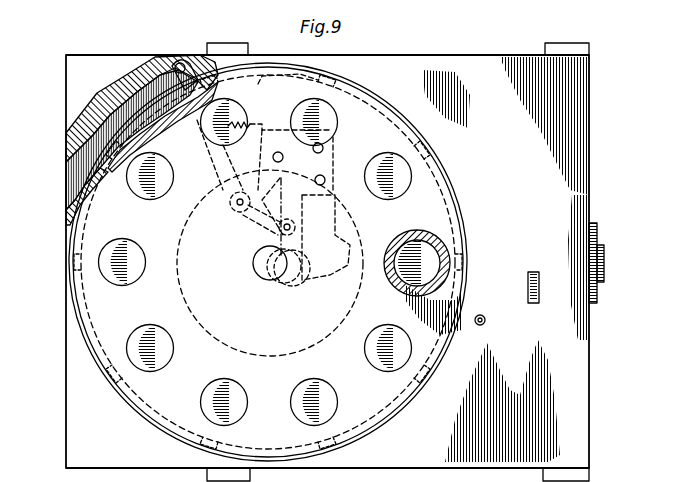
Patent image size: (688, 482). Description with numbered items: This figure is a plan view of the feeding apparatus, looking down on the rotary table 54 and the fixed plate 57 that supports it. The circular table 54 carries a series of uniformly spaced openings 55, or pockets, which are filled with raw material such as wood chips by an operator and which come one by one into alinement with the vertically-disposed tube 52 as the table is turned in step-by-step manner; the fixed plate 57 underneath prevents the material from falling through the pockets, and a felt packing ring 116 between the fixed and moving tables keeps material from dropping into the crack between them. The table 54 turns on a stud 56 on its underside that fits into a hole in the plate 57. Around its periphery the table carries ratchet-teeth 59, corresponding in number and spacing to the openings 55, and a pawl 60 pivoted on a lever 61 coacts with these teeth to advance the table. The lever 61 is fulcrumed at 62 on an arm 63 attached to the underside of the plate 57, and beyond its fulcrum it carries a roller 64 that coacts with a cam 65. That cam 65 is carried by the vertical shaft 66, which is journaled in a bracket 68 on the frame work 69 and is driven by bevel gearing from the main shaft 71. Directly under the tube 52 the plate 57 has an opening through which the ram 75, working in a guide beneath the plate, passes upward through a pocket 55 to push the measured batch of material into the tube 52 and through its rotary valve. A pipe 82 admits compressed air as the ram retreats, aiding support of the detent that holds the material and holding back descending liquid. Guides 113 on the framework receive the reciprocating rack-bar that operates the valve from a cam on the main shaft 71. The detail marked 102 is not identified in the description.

The vertically-disposed tube 52 is at (286, 262).
The rotary table 54 is at (268, 262).
The openings 55 is at (255, 262).
The stud 56 is at (253, 273).
The fixed plate 57 is at (327, 261).
The ratchet-teeth 59 is at (204, 118).
The pawl 60 is at (160, 60).
The lever 61 is at (230, 187).
The fulcrum 62 is at (223, 212).
The arm 63 is at (259, 235).
The roller 64 is at (242, 240).
The cam 65 is at (311, 222).
The vertical shaft 66 is at (288, 285).
The bracket 68 is at (303, 263).
The frame work 69 is at (388, 250).
The main shaft 71 is at (611, 263).
The ram 75 is at (444, 263).
The pipe 82 is at (494, 325).
The casing wall 102 is at (220, 232).
The guides 113 is at (551, 287).
The packing ring 116 is at (489, 401).